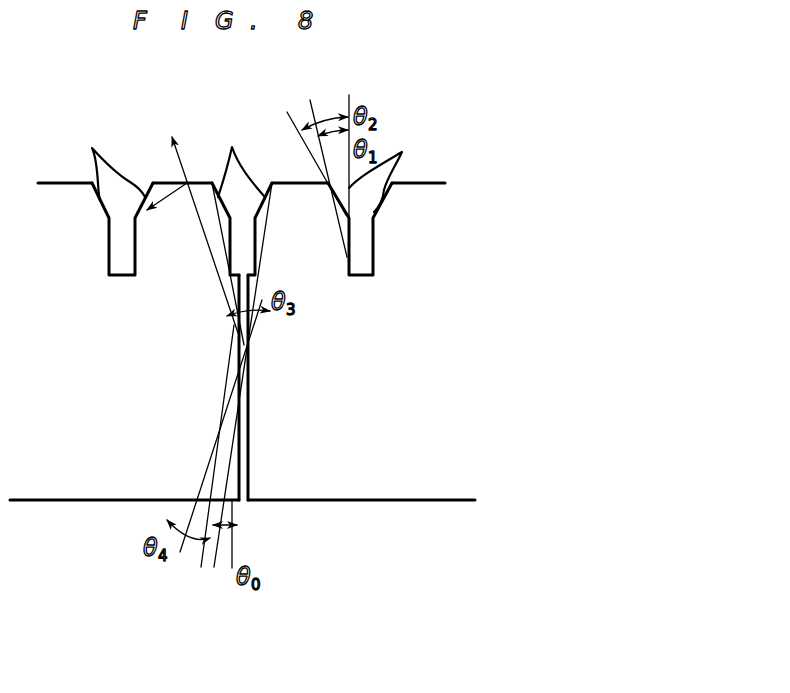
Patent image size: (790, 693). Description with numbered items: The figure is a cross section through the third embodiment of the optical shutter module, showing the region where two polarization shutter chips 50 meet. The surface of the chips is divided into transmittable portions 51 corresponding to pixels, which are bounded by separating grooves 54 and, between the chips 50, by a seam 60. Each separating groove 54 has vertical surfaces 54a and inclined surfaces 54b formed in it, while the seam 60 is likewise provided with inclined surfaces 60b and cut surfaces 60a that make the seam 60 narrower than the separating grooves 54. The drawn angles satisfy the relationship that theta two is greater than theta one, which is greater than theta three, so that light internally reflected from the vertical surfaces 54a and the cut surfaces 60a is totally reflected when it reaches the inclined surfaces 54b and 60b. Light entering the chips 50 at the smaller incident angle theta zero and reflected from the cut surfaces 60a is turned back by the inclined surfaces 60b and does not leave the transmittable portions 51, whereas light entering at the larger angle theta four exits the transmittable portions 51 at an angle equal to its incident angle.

The polarization shutter chip 50 is at (67, 510).
The transmittable portion 51 is at (144, 197).
The separating groove 54 is at (123, 262).
The vertical surface 54a is at (349, 238).
The inclined surface 54b is at (256, 165).
The seam 60 is at (235, 240).
The cut surface 60a is at (247, 327).
The inclined surface 60b is at (235, 157).